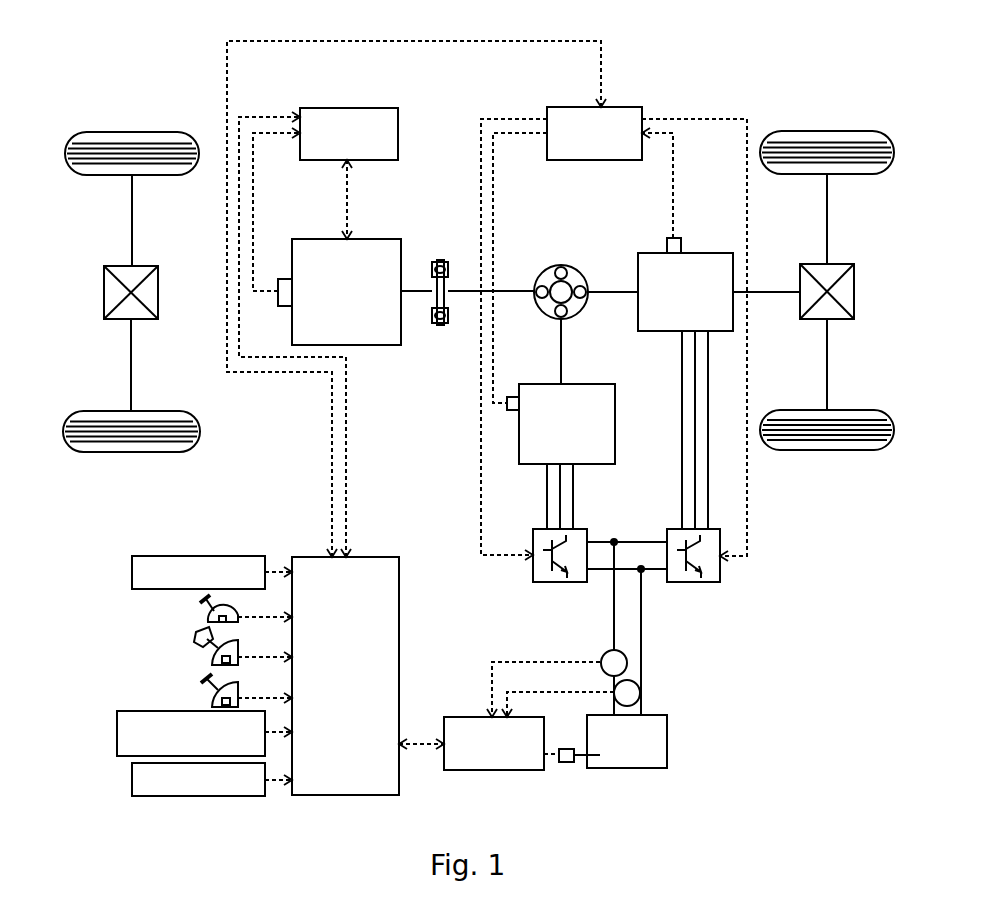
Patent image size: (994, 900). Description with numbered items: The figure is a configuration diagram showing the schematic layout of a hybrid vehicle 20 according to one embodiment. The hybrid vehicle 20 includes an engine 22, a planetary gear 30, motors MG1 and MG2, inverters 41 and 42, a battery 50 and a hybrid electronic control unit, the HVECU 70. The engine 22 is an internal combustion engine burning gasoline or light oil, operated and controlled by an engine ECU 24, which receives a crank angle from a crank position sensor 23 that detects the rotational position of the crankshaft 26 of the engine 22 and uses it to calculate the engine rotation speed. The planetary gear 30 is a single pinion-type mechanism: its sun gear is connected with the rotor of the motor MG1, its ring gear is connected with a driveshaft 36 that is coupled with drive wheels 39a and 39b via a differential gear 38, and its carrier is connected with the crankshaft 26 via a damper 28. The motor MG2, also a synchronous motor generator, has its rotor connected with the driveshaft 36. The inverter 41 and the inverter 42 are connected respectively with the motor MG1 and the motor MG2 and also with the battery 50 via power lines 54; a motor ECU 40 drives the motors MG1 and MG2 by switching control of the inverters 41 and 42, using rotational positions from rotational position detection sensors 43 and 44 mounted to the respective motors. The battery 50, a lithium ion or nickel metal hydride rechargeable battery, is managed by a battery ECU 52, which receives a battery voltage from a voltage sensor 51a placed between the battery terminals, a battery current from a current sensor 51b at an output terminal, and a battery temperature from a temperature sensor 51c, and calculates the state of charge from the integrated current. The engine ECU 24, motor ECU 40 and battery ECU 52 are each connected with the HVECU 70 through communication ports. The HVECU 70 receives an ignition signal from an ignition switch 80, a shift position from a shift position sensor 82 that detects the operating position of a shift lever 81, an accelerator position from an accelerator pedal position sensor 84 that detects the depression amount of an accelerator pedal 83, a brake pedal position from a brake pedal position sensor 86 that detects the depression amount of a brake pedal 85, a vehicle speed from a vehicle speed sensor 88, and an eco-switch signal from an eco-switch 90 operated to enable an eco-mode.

The hybrid vehicle 20 is at (733, 76).
The engine 22 is at (374, 238).
The crank position sensor 23 is at (285, 278).
The engine ECU 24 is at (348, 107).
The crankshaft 26 is at (413, 290).
The damper 28 is at (441, 260).
The planetary gear 30 is at (560, 265).
The driveshaft 36 is at (773, 289).
The differential gear 38 is at (838, 264).
The drive wheel 39a is at (827, 130).
The drive wheel 39b is at (826, 450).
The motor ECU 40 is at (614, 106).
The inverter 41 is at (582, 528).
The inverter 42 is at (716, 528).
The rotational position detection sensor 43 is at (514, 397).
The rotational position detection sensor 44 is at (667, 238).
The battery 50 is at (667, 741).
The voltage sensor 51a is at (640, 693).
The current sensor 51b is at (628, 663).
The temperature sensor 51c is at (566, 763).
The battery ECU 52 is at (475, 716).
The power lines 54 is at (616, 603).
The HVECU 70 is at (374, 556).
The ignition switch 80 is at (132, 571).
The shift lever 81 is at (206, 610).
The shift position sensor 82 is at (210, 618).
The accelerator pedal 83 is at (196, 645).
The accelerator pedal position sensor 84 is at (212, 660).
The brake pedal 85 is at (206, 688).
The brake pedal position sensor 86 is at (212, 701).
The vehicle speed sensor 88 is at (117, 731).
The eco-switch 90 is at (132, 779).
The motor MG1 is at (590, 383).
The motor MG2 is at (705, 252).